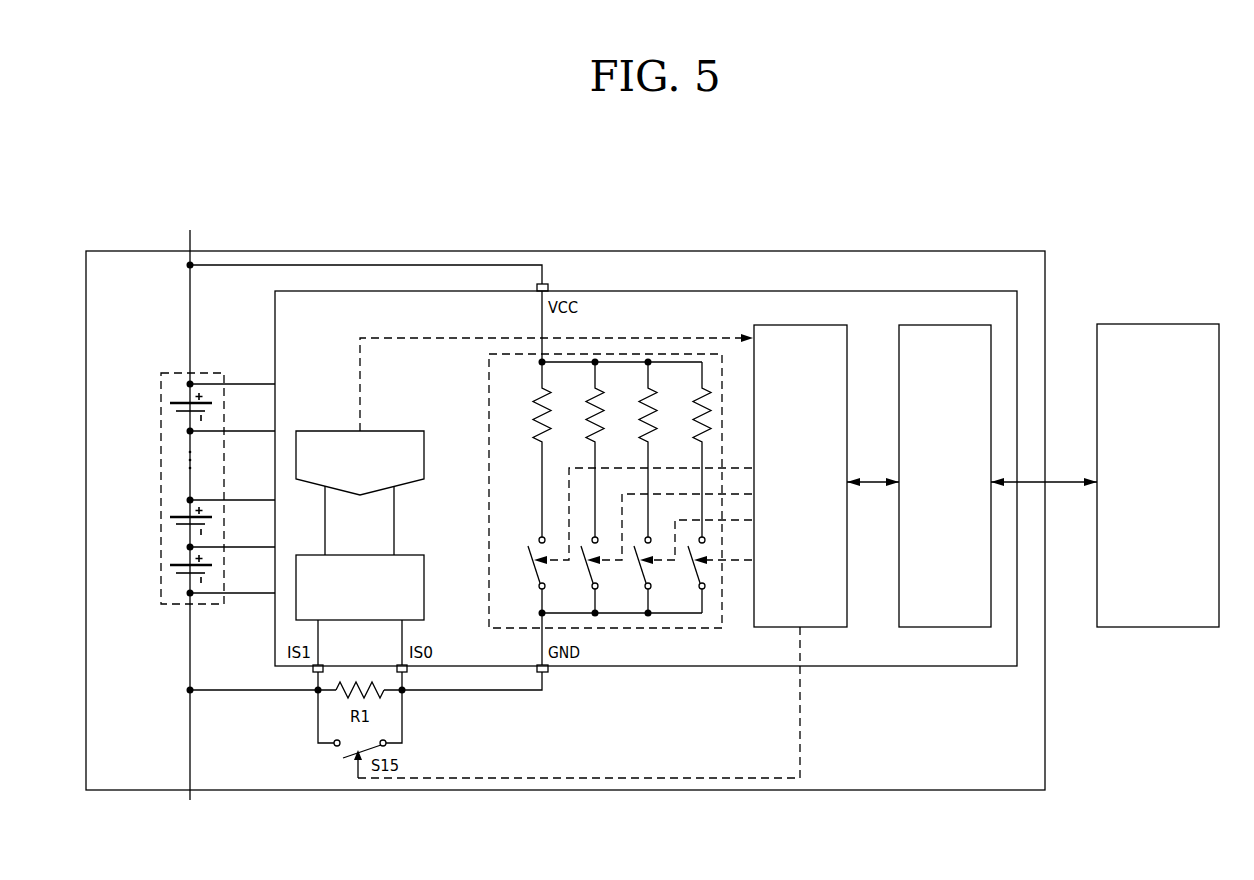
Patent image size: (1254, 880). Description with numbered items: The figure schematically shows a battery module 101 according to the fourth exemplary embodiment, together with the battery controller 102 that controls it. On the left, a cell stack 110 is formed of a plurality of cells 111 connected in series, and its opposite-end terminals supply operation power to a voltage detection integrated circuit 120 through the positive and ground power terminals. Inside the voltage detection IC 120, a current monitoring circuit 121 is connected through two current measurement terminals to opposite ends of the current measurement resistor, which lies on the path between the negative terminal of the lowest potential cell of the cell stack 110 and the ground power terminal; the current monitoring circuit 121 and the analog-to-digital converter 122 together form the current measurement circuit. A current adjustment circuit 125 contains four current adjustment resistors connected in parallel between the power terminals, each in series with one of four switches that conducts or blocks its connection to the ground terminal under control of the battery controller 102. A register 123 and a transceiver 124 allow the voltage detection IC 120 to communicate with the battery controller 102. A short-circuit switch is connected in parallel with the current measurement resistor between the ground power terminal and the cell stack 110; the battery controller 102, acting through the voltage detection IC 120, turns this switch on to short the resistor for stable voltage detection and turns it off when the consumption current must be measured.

The battery module 101 is at (1016, 251).
The battery controller 102 is at (1157, 324).
The cell stack 110 is at (161, 452).
The cell 111 is at (175, 403).
The voltage detection integrated circuit 120 is at (648, 291).
The current monitoring circuit 121 is at (298, 555).
The analog-to-digital converter 122 is at (298, 431).
The register 123 is at (797, 325).
The transceiver 124 is at (944, 325).
The current adjustment circuit 125 is at (489, 607).